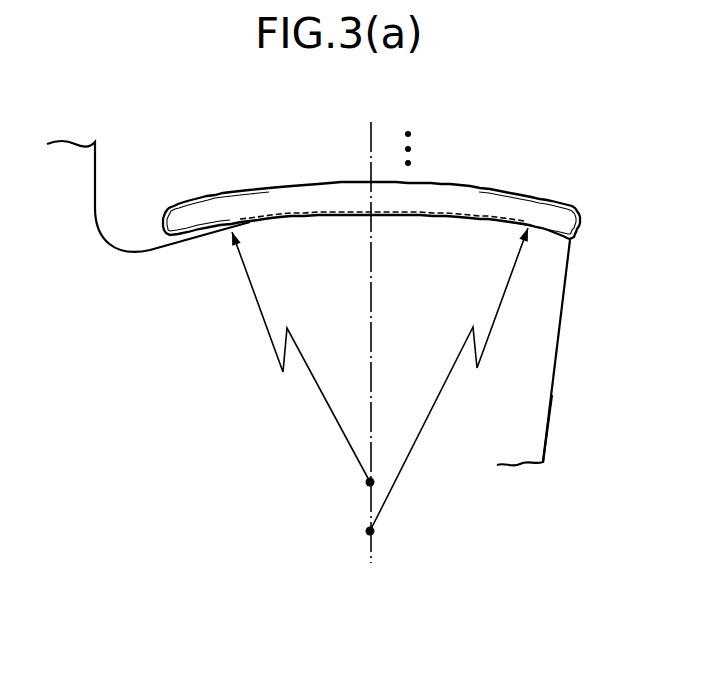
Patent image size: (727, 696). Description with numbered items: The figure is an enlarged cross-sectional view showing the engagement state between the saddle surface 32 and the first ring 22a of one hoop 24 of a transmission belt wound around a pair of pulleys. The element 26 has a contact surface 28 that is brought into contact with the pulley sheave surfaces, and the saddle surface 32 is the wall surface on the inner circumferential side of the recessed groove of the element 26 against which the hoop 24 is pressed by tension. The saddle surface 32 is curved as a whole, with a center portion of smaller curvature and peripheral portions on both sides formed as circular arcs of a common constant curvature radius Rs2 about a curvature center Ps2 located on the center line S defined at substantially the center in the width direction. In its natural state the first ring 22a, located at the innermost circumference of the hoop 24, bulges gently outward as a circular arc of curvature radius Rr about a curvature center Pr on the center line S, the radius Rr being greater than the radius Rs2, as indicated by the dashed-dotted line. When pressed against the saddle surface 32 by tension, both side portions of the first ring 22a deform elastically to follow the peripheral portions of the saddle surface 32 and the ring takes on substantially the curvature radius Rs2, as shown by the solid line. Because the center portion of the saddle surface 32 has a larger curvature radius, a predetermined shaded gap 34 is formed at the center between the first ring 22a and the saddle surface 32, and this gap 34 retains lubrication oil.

The first ring 22a is at (273, 203).
The hoop 24 is at (492, 135).
The element 26 is at (530, 325).
The contact surface 28 is at (552, 425).
The saddle surface 32 is at (505, 215).
The gap 34 is at (348, 212).
The center line S is at (368, 331).
The curvature radius Rs2 is at (299, 357).
The curvature radius Rr is at (449, 379).
The curvature center Ps2 is at (350, 496).
The curvature center Pr is at (384, 544).